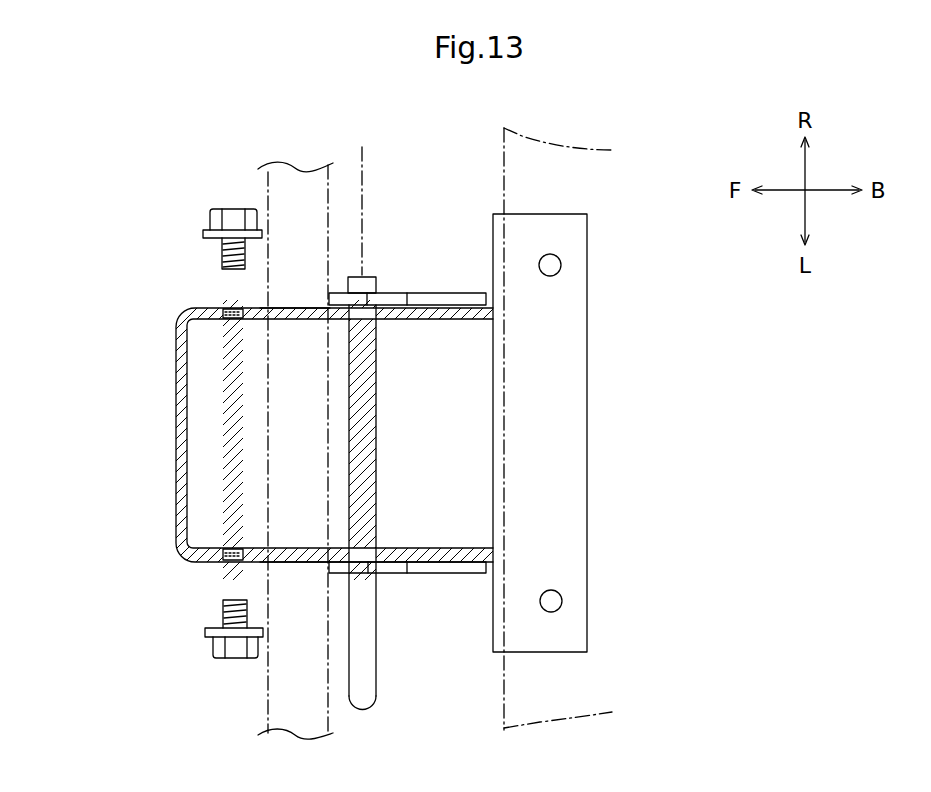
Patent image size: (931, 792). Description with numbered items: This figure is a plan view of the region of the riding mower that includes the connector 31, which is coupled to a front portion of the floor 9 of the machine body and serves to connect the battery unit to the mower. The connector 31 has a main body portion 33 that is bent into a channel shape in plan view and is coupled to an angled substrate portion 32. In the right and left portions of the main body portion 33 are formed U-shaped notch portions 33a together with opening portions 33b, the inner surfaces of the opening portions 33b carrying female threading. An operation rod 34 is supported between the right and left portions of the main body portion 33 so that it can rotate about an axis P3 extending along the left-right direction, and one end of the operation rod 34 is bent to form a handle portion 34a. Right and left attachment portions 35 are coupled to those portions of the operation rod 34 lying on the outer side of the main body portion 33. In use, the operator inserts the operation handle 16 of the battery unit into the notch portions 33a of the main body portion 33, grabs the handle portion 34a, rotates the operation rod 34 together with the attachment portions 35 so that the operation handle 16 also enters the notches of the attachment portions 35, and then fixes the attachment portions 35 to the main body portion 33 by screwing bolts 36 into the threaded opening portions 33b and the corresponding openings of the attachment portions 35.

The floor 9 is at (500, 170).
The operation handle 16 is at (266, 433).
The connector 31 is at (162, 305).
The substrate portion 32 is at (540, 432).
The main body portion 33 is at (178, 460).
The notch portion 33a is at (299, 313).
The opening portion 33b is at (236, 320).
The operation rod 34 is at (360, 433).
The handle portion 34a is at (353, 687).
The attachment portion 35 is at (432, 296).
The bolt 36 is at (208, 222).
The axis P3 is at (362, 198).